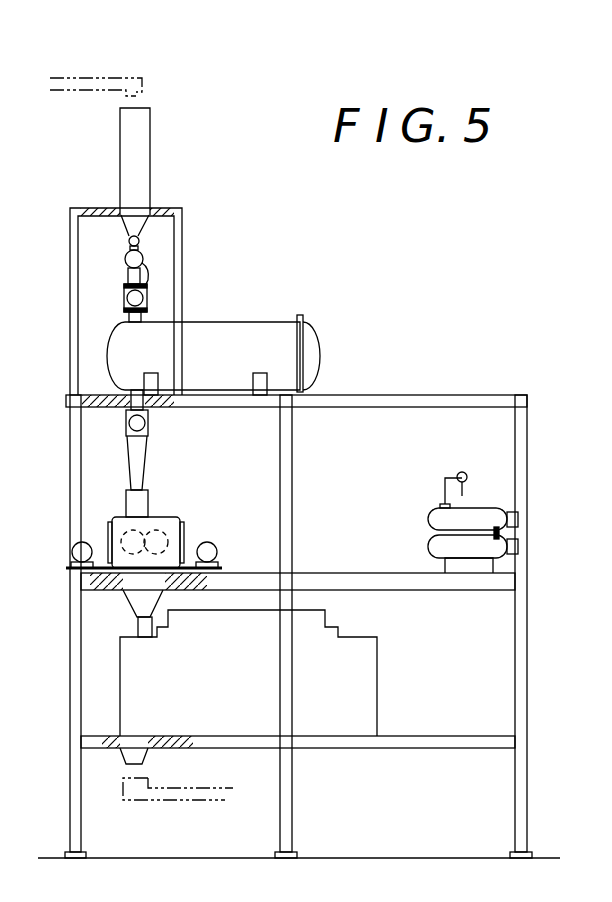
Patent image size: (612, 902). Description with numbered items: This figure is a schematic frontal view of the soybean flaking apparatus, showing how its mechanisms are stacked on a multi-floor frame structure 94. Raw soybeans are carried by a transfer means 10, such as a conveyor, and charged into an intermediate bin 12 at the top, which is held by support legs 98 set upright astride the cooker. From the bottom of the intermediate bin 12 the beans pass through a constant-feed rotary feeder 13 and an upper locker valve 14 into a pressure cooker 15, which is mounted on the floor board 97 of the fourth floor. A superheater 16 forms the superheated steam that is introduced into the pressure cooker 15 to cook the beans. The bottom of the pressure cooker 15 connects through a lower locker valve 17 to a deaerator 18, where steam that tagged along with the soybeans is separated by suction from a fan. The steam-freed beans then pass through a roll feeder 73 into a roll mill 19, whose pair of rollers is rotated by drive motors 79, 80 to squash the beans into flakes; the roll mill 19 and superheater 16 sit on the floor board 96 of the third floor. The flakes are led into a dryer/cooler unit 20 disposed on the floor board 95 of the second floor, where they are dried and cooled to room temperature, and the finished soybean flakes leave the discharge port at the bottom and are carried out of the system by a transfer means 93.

The transfer means 10 is at (110, 75).
The intermediate bin 12 is at (150, 145).
The constant-feed rotary feeder 13 is at (142, 258).
The upper locker valve 14 is at (143, 297).
The pressure cooker 15 is at (276, 322).
The superheater 16 is at (428, 532).
The lower locker valve 17 is at (124, 418).
The deaerator 18 is at (189, 468).
The roll mill 19 is at (180, 535).
The dryer/cooler unit 20 is at (378, 683).
The roll feeder 73 is at (126, 500).
The drive motor 79 is at (72, 553).
The drive motor 80 is at (216, 549).
The transfer means 93 is at (200, 800).
The frame structure 94 is at (70, 660).
The floor board 95 is at (93, 746).
The floor board 96 is at (398, 591).
The floor board 97 is at (230, 402).
The support legs 98 is at (70, 270).